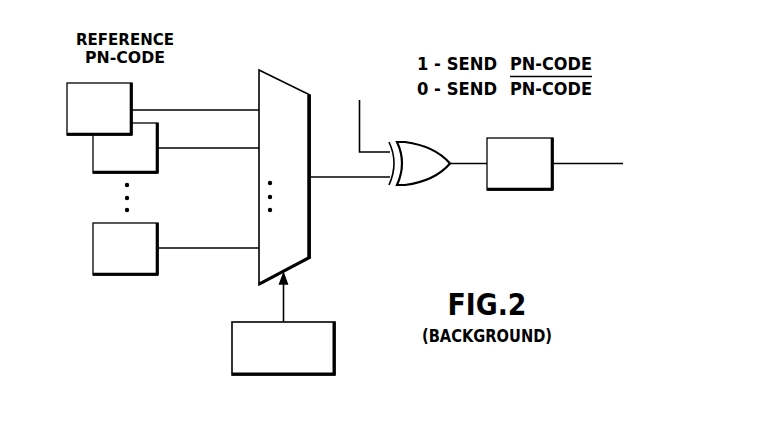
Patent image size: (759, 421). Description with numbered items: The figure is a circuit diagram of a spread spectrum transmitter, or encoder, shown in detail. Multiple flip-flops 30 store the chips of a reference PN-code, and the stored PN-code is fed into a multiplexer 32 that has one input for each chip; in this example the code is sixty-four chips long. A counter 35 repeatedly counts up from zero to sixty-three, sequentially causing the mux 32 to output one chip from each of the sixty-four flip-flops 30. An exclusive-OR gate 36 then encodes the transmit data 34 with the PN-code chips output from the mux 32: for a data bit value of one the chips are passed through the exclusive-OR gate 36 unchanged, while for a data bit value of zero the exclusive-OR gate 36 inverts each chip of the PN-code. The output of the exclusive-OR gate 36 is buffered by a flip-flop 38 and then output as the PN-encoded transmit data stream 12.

The PN-encoded transmit data stream 12 is at (584, 163).
The flip-flops 30 is at (92, 249).
The multiplexer 32 is at (287, 82).
The transmit data 34 is at (360, 120).
The counter 35 is at (232, 350).
The exclusive-OR gate 36 is at (410, 187).
The flip-flop 38 is at (518, 191).